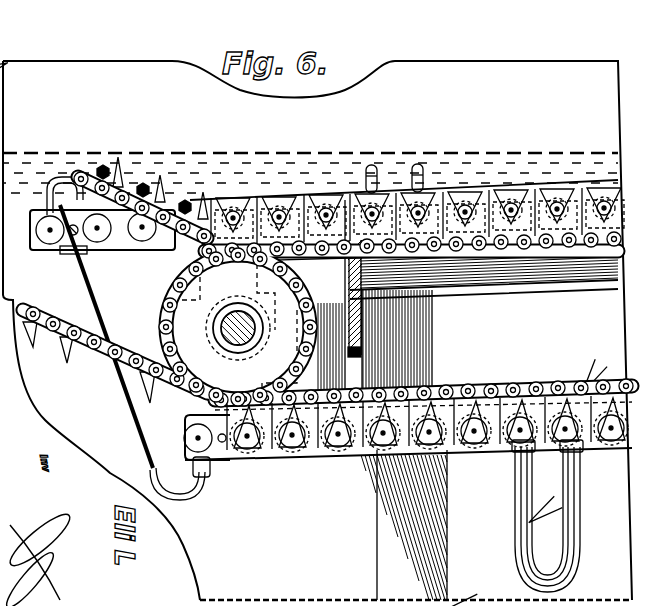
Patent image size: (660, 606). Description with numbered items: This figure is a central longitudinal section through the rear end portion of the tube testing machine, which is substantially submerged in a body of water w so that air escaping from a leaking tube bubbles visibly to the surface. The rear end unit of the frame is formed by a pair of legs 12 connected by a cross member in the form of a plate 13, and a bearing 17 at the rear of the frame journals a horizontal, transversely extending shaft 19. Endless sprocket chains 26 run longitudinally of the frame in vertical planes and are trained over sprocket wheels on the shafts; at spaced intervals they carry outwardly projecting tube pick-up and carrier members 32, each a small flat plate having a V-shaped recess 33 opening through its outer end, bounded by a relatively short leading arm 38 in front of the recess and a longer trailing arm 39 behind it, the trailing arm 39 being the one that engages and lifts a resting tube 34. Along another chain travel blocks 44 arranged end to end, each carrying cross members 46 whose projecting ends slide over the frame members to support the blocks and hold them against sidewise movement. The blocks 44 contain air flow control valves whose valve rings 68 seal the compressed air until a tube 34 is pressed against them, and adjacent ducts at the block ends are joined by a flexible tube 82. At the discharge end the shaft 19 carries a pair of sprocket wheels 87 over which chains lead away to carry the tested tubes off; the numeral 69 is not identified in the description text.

The body of water w is at (336, 160).
The legs 12 is at (398, 565).
The plate 13 is at (362, 318).
The bearing 17 is at (218, 326).
The shaft 19 is at (243, 345).
The endless sprocket chain 26 is at (512, 250).
The tube pick-up and carrier member 32 is at (168, 262).
The V-shaped recess 33 is at (338, 413).
The tube 34 is at (505, 202).
The short arm 38 is at (508, 443).
The long arm 39 is at (582, 443).
The block 44 is at (262, 208).
The cross member 46 is at (70, 250).
The valve ring 68 is at (77, 172).
The blade 69 is at (110, 177).
The flexible tube 82 is at (135, 426).
The sprocket wheel 87 is at (238, 328).